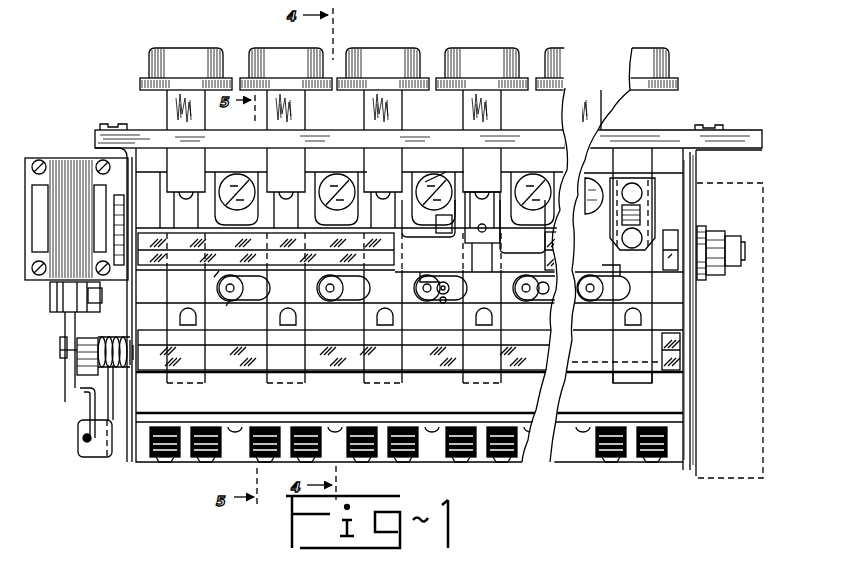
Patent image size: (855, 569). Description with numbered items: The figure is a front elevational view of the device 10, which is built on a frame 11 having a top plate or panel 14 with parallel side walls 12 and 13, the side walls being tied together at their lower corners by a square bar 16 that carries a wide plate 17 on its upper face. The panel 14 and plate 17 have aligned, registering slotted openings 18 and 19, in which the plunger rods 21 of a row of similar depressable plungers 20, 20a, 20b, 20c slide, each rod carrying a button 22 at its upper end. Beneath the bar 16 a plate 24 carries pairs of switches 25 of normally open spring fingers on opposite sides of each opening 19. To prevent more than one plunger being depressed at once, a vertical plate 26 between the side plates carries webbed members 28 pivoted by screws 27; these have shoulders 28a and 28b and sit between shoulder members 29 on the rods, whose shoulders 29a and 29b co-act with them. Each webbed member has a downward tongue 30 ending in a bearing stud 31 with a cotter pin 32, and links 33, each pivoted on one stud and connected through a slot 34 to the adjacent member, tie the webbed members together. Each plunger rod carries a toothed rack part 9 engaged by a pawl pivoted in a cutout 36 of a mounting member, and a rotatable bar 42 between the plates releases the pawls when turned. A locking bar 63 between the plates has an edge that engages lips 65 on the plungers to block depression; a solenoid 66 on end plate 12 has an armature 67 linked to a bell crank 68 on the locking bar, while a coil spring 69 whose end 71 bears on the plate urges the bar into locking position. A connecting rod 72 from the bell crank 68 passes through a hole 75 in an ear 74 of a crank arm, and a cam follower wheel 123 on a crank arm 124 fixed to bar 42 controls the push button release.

The device 10 is at (76, 60).
The depressable plunger 20 is at (188, 45).
The depressable plunger 20a is at (280, 45).
The depressable plunger 20b is at (372, 45).
The depressable plunger 20c is at (454, 45).
The button 22 is at (497, 50).
The frame 11 is at (95, 143).
The top plate or panel 14 is at (162, 130).
The slotted opening 18 is at (208, 140).
The side wall 13 is at (697, 175).
The plunger rod 21 is at (395, 166).
The screw 27 is at (436, 178).
The cutout 36 is at (478, 175).
The shoulder member 29 is at (518, 180).
The vertical plate 26 is at (670, 180).
The toothed rack part 9 is at (640, 218).
The cam follower wheel 123 is at (722, 232).
The crank arm 124 is at (713, 270).
The solenoid 66 is at (25, 222).
The armature 67 is at (50, 292).
The bar 42 is at (165, 266).
The shoulder 28a is at (404, 233).
The shoulder 28b is at (452, 238).
The shoulder 29b is at (486, 228).
The shoulder 29a is at (480, 260).
The bearing stud 31 is at (428, 282).
The webbed member 28 is at (410, 278).
The side wall 12 is at (129, 303).
The spring end 71 is at (134, 325).
The coil spring 69 is at (114, 339).
The link 33 is at (370, 305).
The lip 65 is at (416, 326).
The cotter pin 32 is at (432, 305).
The tongue 30 is at (443, 300).
The slot 34 is at (451, 304).
The locking bar 63 is at (532, 352).
The bell crank 68 is at (60, 366).
The plate 17 is at (524, 381).
The square bar 16 is at (522, 403).
The connecting rod 72 is at (80, 405).
The plate 24 is at (515, 423).
The slotted opening 19 is at (215, 382).
The hole 75 is at (78, 447).
The ear 74 is at (90, 457).
The switch 25 is at (206, 470).